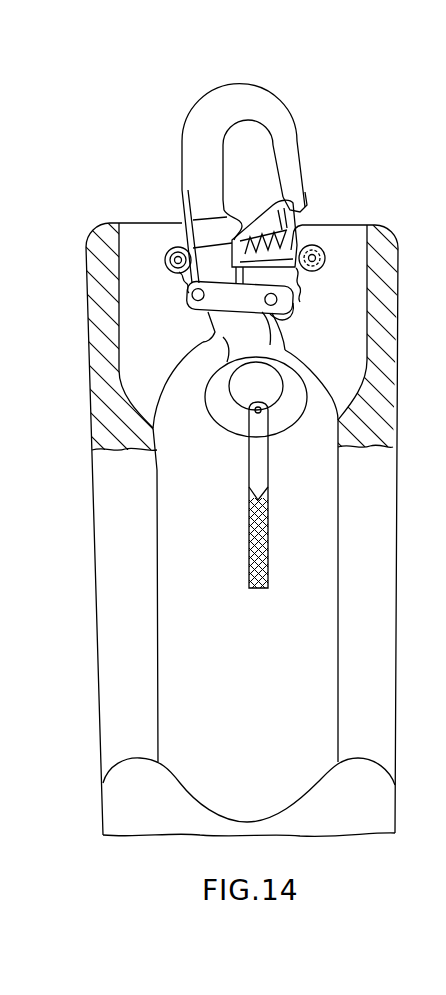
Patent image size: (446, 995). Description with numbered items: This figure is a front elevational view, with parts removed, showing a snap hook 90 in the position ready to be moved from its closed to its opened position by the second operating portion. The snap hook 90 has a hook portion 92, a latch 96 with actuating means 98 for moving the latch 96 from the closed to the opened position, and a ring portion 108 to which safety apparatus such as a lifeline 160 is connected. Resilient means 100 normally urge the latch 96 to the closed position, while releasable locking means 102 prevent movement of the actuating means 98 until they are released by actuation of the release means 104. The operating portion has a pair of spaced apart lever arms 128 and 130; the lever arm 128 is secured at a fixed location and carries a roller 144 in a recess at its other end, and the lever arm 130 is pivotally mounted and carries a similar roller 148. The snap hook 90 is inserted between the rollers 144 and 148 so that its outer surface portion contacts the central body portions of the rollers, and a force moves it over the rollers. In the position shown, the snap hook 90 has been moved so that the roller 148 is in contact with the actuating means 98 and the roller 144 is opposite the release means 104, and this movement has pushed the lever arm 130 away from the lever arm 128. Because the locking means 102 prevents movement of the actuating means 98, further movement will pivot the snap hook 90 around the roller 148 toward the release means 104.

The snap hook 90 is at (138, 137).
The hook portion 92 is at (252, 95).
The latch 96 is at (296, 206).
The resilient means 100 is at (296, 230).
The release means 104 is at (298, 283).
The releasable locking means 102 is at (283, 328).
The actuating means 98 is at (180, 295).
The roller 148 is at (178, 247).
The roller 144 is at (325, 250).
The ring portion 108 is at (233, 422).
The lifeline 160 is at (268, 460).
The lever arm 130 is at (108, 498).
The lever arm 128 is at (382, 480).